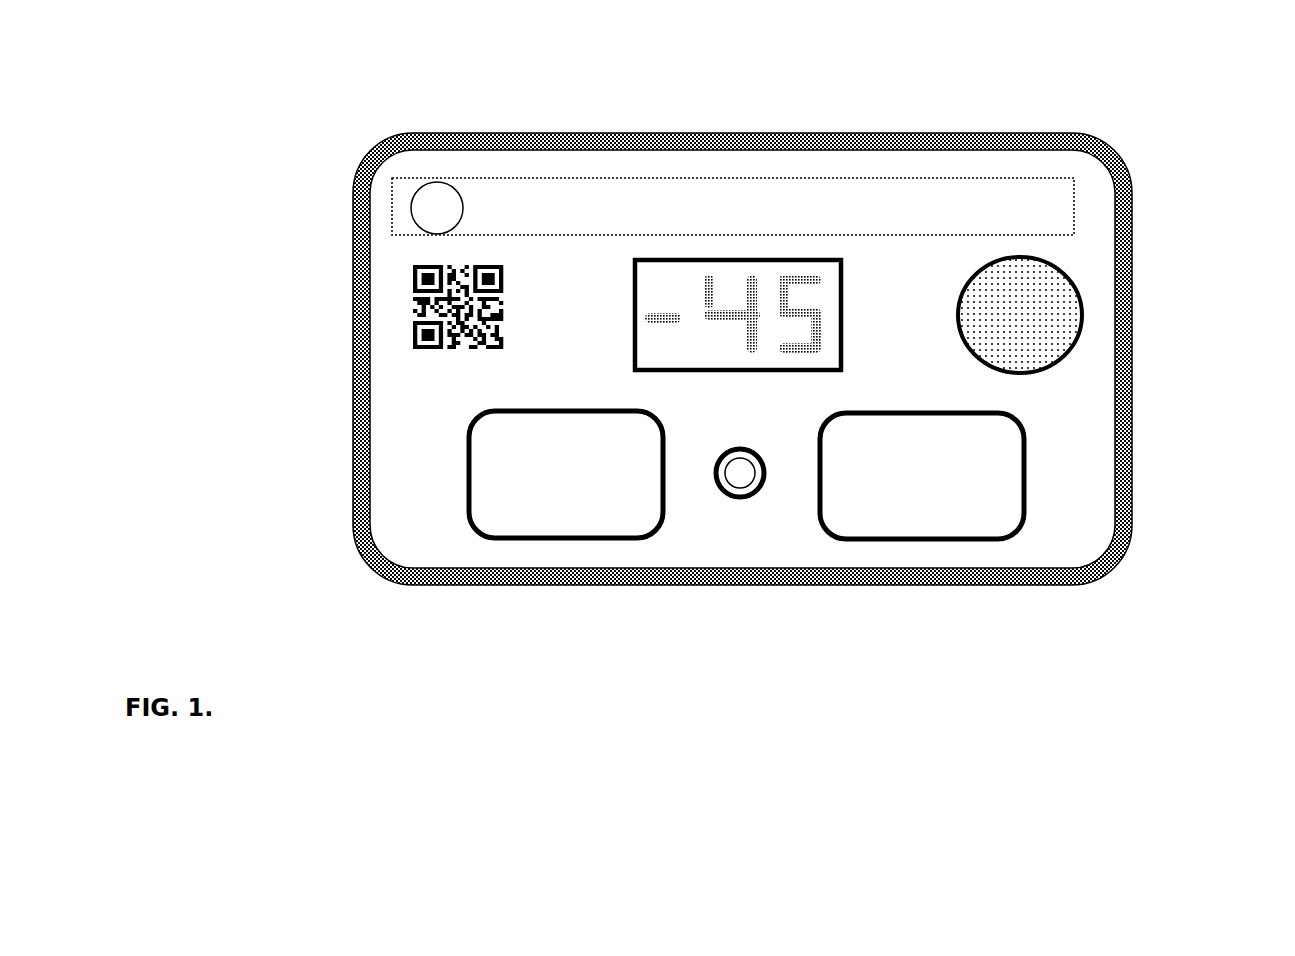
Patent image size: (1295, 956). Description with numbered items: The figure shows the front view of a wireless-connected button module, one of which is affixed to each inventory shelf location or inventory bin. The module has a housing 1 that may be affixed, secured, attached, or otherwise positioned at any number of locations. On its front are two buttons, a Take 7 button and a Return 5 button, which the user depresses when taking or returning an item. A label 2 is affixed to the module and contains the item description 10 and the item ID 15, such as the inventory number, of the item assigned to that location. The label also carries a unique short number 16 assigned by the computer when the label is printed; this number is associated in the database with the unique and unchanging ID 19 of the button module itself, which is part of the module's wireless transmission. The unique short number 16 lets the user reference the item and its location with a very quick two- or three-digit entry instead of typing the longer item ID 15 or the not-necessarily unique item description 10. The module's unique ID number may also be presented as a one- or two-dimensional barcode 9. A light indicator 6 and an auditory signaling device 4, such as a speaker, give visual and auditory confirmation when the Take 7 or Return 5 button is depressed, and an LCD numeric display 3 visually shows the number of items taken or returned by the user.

The housing 1 is at (345, 500).
The label 2 is at (733, 178).
The LCD numeric display 3 is at (633, 372).
The auditory signaling device 4 is at (1086, 300).
The Return button 5 is at (953, 547).
The light indicator 6 is at (733, 502).
The Take button 7 is at (523, 540).
The barcode 9 is at (395, 293).
The item description 10 is at (870, 192).
The item ID 15 is at (550, 190).
The unique short number 16 is at (408, 210).
The unique ID of the button module 19 is at (403, 367).